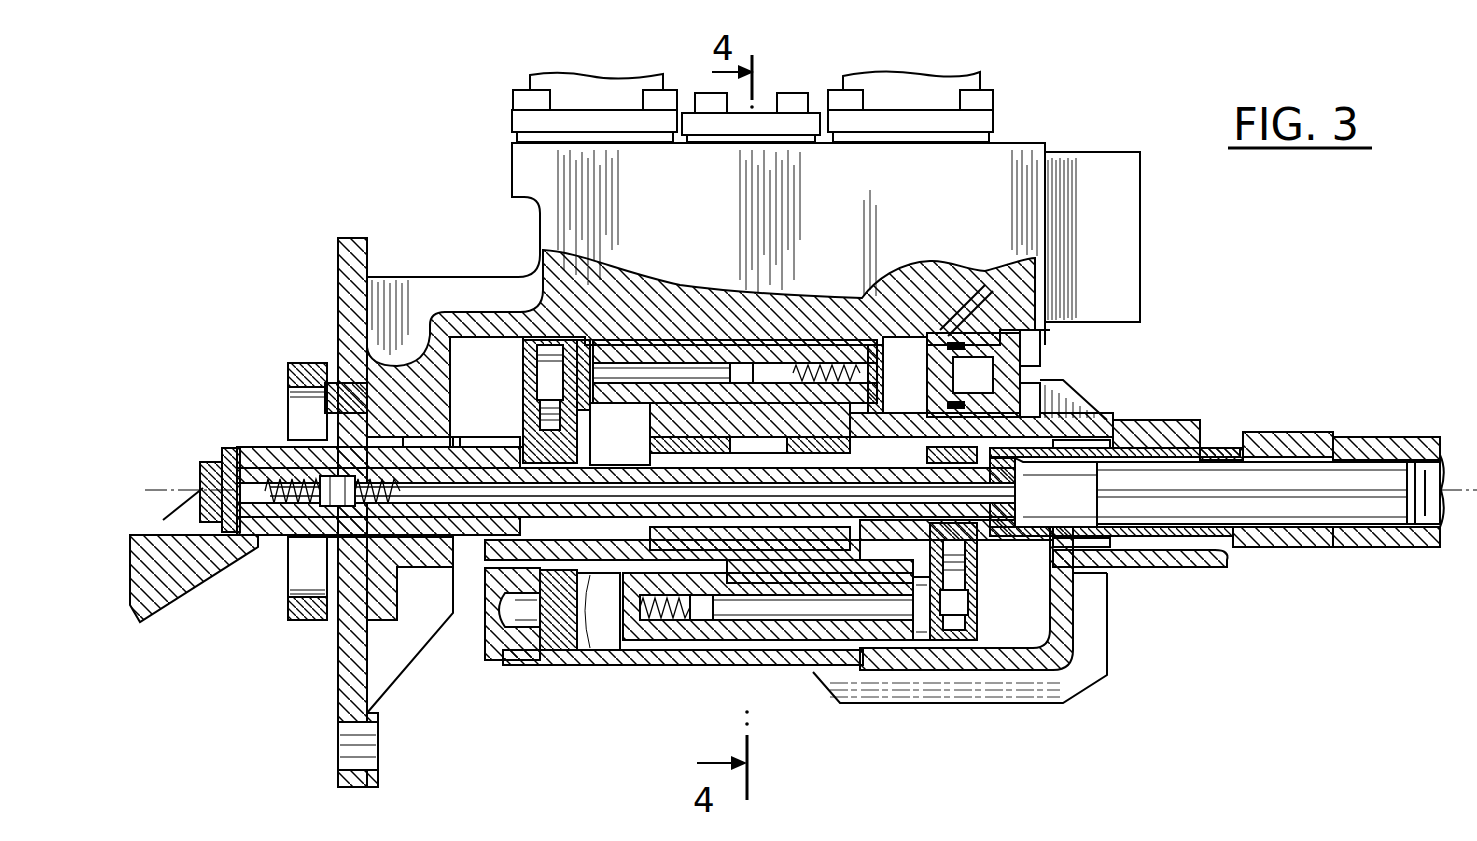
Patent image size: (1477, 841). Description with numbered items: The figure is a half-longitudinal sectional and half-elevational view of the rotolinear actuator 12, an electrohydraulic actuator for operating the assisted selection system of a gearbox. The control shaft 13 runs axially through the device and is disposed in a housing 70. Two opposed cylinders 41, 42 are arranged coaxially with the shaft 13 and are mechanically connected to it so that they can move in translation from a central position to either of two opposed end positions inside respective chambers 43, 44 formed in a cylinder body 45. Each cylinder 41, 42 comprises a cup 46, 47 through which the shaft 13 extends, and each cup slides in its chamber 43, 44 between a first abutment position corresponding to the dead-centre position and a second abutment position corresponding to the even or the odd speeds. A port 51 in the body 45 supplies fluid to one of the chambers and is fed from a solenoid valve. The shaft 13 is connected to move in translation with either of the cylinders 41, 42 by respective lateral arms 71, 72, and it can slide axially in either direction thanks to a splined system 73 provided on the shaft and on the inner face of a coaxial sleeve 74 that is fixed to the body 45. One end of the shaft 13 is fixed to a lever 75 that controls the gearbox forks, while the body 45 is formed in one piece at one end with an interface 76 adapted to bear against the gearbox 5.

The rotolinear actuator 12 is at (414, 178).
The control shaft 13 is at (628, 530).
The cylinder 41 is at (688, 664).
The cylinder 42 is at (874, 316).
The chamber 43 is at (578, 653).
The chamber 44 is at (910, 358).
The cylinder body 45 is at (560, 659).
The cup 46 is at (733, 656).
The cup 47 is at (842, 297).
The end fitting 5 is at (1452, 500).
The port 51 is at (1049, 372).
The housing 70 is at (1185, 575).
The lateral arm 71 is at (965, 590).
The lateral arm 72 is at (530, 420).
The splined system 73 is at (640, 457).
The coaxial sleeve 74 is at (850, 442).
The lever 75 is at (238, 580).
The interface 76 is at (338, 665).